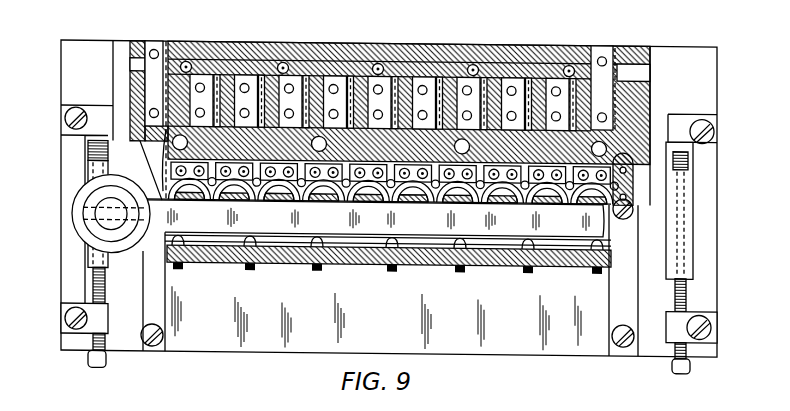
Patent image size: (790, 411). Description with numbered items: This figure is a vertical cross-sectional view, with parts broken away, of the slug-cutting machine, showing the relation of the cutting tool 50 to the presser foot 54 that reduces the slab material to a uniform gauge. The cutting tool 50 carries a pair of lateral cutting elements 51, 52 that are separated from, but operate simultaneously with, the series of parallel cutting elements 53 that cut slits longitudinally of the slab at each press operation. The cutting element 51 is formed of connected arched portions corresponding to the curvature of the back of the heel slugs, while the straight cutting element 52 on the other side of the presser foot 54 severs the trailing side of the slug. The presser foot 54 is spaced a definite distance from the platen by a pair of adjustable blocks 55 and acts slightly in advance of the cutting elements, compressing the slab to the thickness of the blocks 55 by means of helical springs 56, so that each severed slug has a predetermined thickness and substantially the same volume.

The cutting tool 50 is at (568, 69).
The lateral cutting element 51 is at (323, 187).
The straight cutting element 52 is at (441, 244).
The parallel cutting elements 53 is at (528, 80).
The presser foot 54 is at (471, 224).
The adjustable blocks 55 is at (97, 259).
The helical springs 56 is at (76, 222).